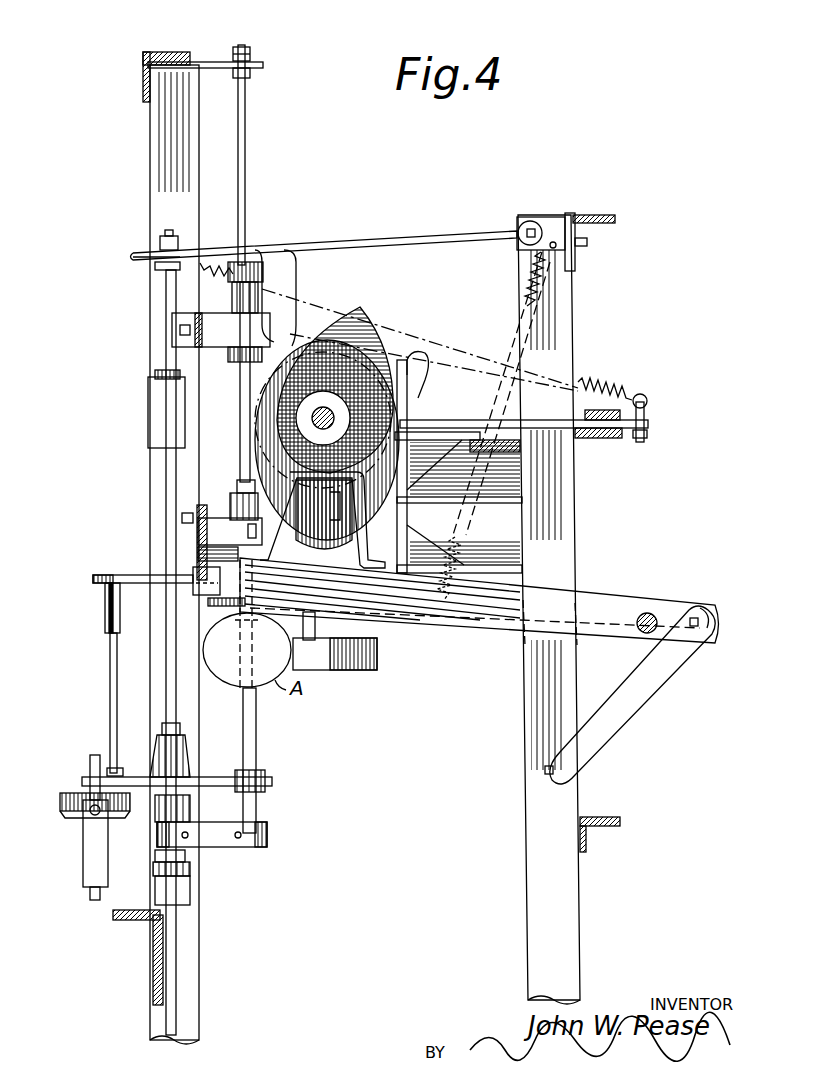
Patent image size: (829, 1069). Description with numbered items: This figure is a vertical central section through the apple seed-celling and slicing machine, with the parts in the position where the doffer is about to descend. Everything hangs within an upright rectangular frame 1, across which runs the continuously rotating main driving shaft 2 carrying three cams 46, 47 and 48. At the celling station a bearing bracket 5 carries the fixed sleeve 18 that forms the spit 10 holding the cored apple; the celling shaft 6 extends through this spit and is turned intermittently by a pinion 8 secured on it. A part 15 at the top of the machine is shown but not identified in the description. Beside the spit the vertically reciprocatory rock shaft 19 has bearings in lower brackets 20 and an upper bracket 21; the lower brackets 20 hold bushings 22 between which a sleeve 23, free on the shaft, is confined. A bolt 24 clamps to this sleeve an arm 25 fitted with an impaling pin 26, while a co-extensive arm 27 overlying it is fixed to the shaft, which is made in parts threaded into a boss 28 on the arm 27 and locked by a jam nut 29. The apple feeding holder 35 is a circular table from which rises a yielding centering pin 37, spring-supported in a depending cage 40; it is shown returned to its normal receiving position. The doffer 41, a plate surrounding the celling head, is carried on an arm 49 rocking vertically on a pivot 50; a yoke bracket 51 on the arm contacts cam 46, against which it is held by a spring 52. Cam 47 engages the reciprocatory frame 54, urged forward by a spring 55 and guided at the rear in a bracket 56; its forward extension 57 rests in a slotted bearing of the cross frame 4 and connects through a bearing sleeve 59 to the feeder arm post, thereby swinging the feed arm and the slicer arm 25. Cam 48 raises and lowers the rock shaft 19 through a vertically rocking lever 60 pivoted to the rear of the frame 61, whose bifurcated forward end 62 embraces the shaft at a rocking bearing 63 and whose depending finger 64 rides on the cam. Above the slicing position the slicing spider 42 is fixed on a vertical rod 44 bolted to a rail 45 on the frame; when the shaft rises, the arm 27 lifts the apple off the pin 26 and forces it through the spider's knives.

The upright rectangular frame 1 is at (160, 128).
The main driving shaft 2 is at (325, 414).
The cross frame 4 is at (228, 341).
The bearing bracket 5 is at (246, 530).
The shaft 6 is at (246, 390).
The pinion 8 is at (253, 268).
The spit 10 is at (247, 650).
The shaft and cross bar 15 is at (263, 67).
The fixed sleeve 18 is at (263, 625).
The rock shaft 19 is at (168, 692).
The lower brackets 20 is at (168, 805).
The upper bracket 21 is at (160, 392).
The bushings 22 is at (158, 375).
The sleeve 23 is at (158, 855).
The bolt 24 is at (212, 835).
The arm 25 is at (249, 848).
The impaling pin 26 is at (258, 735).
The arm 27 is at (224, 777).
The boss 28 is at (165, 745).
The jam nut 29 is at (183, 731).
The apple feeding holder 35 is at (66, 796).
The centering pin 37 is at (97, 760).
The depending cage 40 is at (88, 832).
The doffer 41 is at (208, 602).
The slicing spider 42 is at (360, 670).
The vertical rod 44 is at (317, 620).
The rail 45 is at (497, 550).
The cam 46 is at (378, 340).
The cam 47 is at (322, 520).
The cam 48 is at (422, 372).
The arm 49 is at (470, 616).
The pivot 50 is at (652, 620).
The yoke bracket 51 is at (347, 492).
The spring 52 is at (545, 286).
The reciprocatory frame 54 is at (542, 427).
The spring 55 is at (604, 395).
The bracket 56 is at (605, 438).
The forward extension 57 is at (118, 578).
The bearing sleeve 59 is at (108, 602).
The vertically rocking lever 60 is at (372, 240).
The frame 61 is at (532, 228).
The bifurcated forward end 62 is at (140, 262).
The rocking bearing 63 is at (165, 258).
The depending finger 64 is at (292, 312).